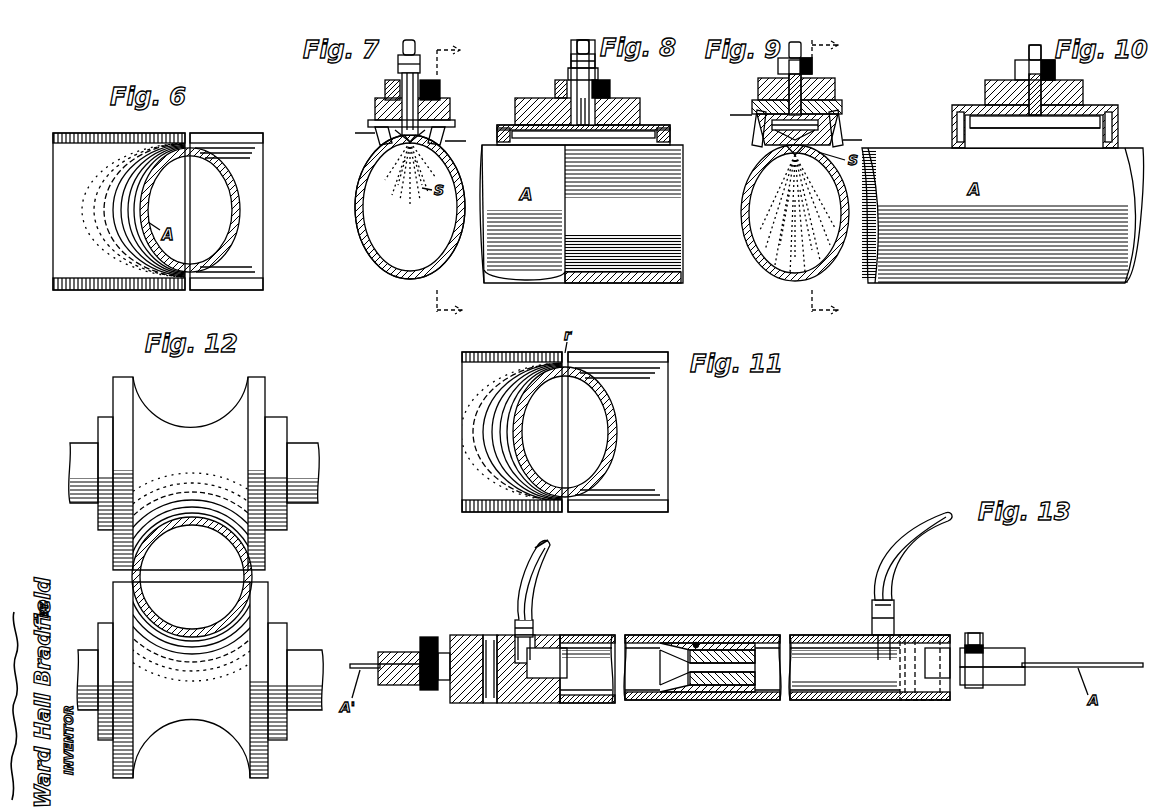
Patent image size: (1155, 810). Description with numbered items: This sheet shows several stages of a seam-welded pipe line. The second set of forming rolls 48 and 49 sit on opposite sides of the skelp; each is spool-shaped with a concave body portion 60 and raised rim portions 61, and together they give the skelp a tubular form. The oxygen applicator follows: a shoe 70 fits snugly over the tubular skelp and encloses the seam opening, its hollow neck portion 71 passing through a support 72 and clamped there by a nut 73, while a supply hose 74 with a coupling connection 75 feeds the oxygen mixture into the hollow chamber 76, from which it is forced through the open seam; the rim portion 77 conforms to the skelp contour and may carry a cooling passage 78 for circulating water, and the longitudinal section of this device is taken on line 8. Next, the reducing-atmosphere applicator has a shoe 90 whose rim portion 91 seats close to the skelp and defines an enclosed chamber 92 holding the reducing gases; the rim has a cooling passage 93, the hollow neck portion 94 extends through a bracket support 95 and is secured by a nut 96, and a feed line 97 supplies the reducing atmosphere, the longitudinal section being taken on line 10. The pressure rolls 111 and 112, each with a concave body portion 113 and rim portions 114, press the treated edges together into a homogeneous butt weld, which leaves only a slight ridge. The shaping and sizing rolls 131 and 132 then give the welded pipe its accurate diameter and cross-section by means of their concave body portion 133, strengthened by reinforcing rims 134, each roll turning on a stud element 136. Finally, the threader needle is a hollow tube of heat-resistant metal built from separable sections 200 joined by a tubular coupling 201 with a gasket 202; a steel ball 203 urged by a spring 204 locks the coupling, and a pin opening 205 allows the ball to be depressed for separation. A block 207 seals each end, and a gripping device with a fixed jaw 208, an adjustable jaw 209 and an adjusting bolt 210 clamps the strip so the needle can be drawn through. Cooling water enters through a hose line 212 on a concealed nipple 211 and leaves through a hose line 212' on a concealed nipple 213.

In FIG. 6, the forming roll 48 is at (47, 175).
In FIG. 6, the forming roll 49 is at (270, 188).
In FIG. 6, the concave body portion 60 is at (60, 213).
In FIG. 6, the raised rim portions 61 is at (68, 133).
In FIG. 7, the shoe 70 is at (368, 124).
In FIG. 8, the shoe 70 is at (640, 128).
In FIG. 7, the hollow neck portion 71 is at (432, 90).
In FIG. 8, the hollow neck portion 71 is at (598, 102).
In FIG. 7, the support 72 is at (450, 108).
In FIG. 8, the support 72 is at (640, 106).
In FIG. 7, the nut 73 is at (386, 90).
In FIG. 8, the nut 73 is at (556, 88).
In FIG. 7, the supply hose 74 is at (403, 47).
In FIG. 8, the supply hose 74 is at (577, 46).
In FIG. 7, the coupling connection 75 is at (399, 62).
In FIG. 8, the coupling connection 75 is at (571, 62).
In FIG. 7, the hollow chamber 76 is at (406, 138).
In FIG. 8, the hollow chamber 76 is at (670, 134).
In FIG. 7, the rim portion 77 is at (408, 140).
In FIG. 7, the cooling passage 78 is at (382, 138).
In FIG. 7, the section line 8— 8 is at (449, 173).
In FIG. 9, the shoe 90 is at (842, 105).
In FIG. 10, the shoe 90 is at (966, 112).
In FIG. 9, the rim portion 91 is at (789, 150).
In FIG. 10, the rim portion 91 is at (958, 148).
In FIG. 9, the enclosed chamber 92 is at (832, 136).
In FIG. 10, the enclosed chamber 92 is at (1092, 148).
In FIG. 9, the passage 93 is at (760, 135).
In FIG. 10, the passage 93 is at (955, 116).
In FIG. 9, the hollow neck portion 94 is at (835, 90).
In FIG. 10, the hollow neck portion 94 is at (1070, 84).
In FIG. 9, the bracket support 95 is at (758, 84).
In FIG. 10, the bracket support 95 is at (1083, 92).
In FIG. 9, the nut 96 is at (812, 68).
In FIG. 10, the nut 96 is at (1015, 70).
In FIG. 9, the feed line 97 is at (803, 55).
In FIG. 10, the feed line 97 is at (1029, 50).
In FIG. 9, the section line 10— 10 is at (836, 176).
In FIG. 11, the pressure roll 111 is at (456, 381).
In FIG. 11, the pressure roll 112 is at (659, 351).
In FIG. 11, the concave body portion 113 is at (470, 414).
In FIG. 11, the rim portions 114 is at (475, 358).
In FIG. 12, the shaping and sizing roll 131 is at (274, 395).
In FIG. 12, the shaping and sizing roll 132 is at (277, 593).
In FIG. 12, the body portion 133 is at (200, 432).
In FIG. 12, the reinforcing and strengthening rims 134 is at (255, 432).
In FIG. 12, the stud element 136 is at (300, 462).
In FIG. 13, the separable sections 200 is at (580, 636).
In FIG. 13, the tubular coupling 201 is at (745, 690).
In FIG. 13, the gasket 202 is at (712, 700).
In FIG. 13, the steel ball 203 is at (700, 650).
In FIG. 13, the spring 204 is at (688, 675).
In FIG. 13, the pin opening 205 is at (695, 643).
In FIG. 13, the block 207 is at (462, 646).
In FIG. 13, the jaw 208 is at (392, 652).
In FIG. 13, the adjustable jaw 209 is at (402, 688).
In FIG. 13, the adjusting bolt 210 is at (430, 636).
In FIG. 13, the concealed nipple 211 is at (876, 640).
In FIG. 13, the hose line 212 is at (551, 580).
In FIG. 13, the hose line 212' is at (909, 546).
In FIG. 13, the concealed nipple 213 is at (540, 632).